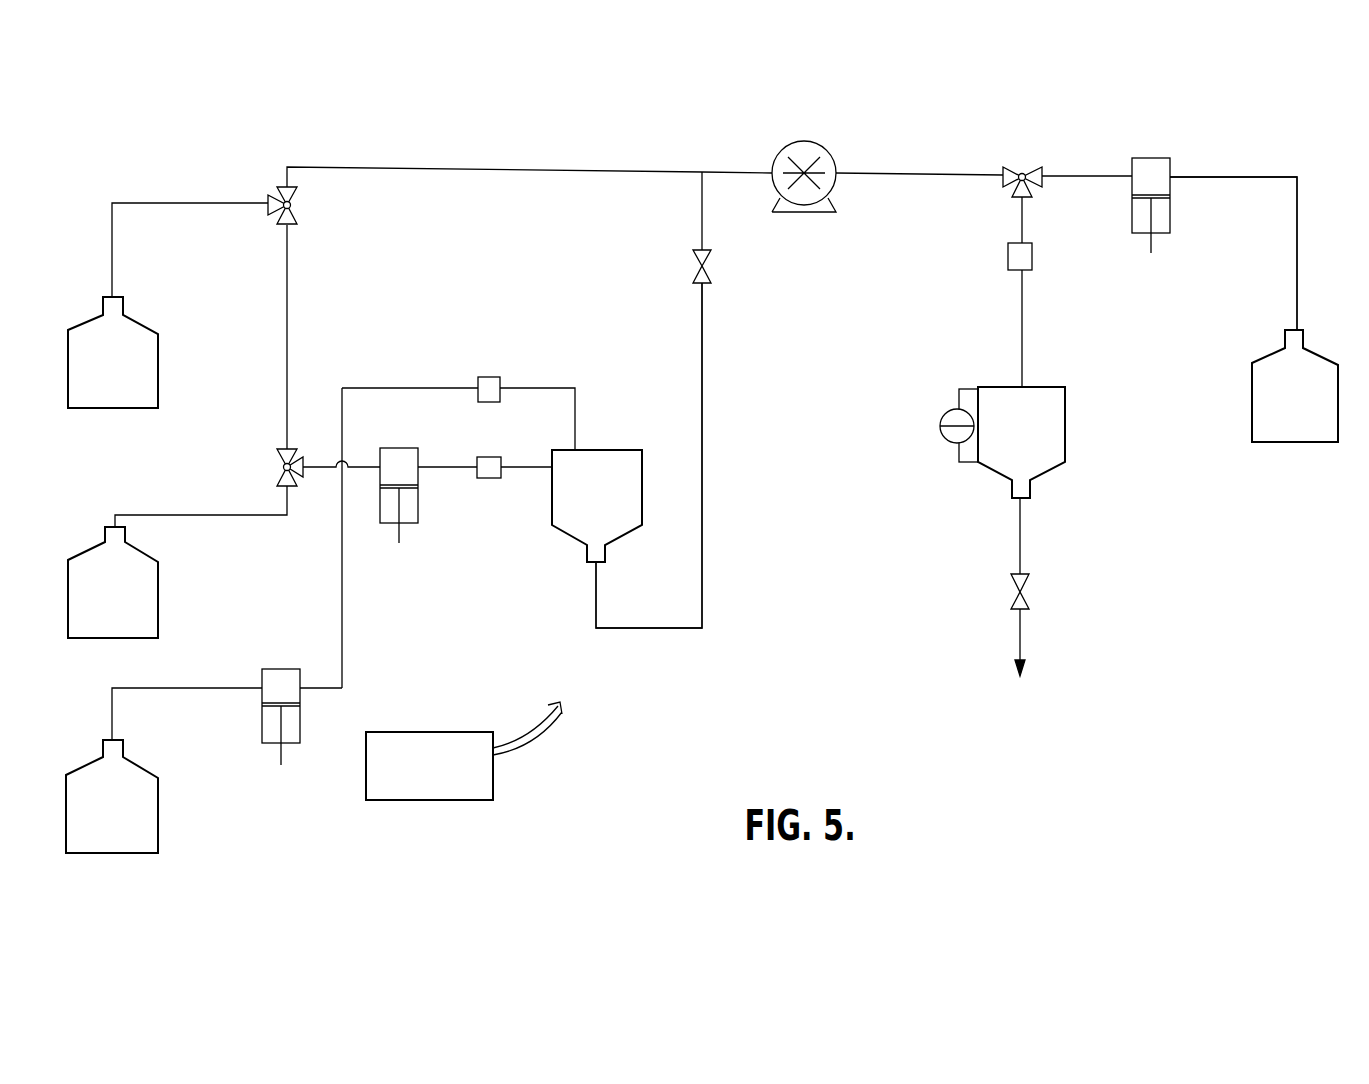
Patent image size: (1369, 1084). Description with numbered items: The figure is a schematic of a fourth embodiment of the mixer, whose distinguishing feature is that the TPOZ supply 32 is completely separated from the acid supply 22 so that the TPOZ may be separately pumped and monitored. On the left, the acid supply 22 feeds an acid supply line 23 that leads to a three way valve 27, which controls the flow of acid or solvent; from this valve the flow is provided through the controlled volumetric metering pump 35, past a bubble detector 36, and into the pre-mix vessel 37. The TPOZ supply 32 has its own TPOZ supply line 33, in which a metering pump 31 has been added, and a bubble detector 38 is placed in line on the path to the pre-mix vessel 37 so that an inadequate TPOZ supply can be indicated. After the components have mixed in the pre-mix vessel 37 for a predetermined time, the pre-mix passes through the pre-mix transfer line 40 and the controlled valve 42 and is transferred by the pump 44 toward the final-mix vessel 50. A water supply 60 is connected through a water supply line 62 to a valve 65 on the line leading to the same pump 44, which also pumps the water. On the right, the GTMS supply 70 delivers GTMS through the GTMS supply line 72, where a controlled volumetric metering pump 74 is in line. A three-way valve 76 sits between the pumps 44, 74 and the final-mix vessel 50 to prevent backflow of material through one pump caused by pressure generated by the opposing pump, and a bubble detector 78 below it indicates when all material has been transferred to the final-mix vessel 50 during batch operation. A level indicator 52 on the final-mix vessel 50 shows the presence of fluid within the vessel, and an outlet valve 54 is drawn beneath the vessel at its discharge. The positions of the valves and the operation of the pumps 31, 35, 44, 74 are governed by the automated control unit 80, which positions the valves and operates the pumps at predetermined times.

The supply of acid 22 is at (158, 590).
The acid supply line 23 is at (134, 500).
The three way valve 27 is at (278, 463).
The metering pump 31 is at (300, 718).
The TPOZ supply 32 is at (158, 782).
The TPOZ supply line 33 is at (189, 682).
The controlled volumetric metering pump 35 is at (420, 495).
The bubble detector 36 is at (481, 480).
The pre-mix vessel 37 is at (600, 450).
The bubble detector 38 is at (484, 376).
The pre-mix transfer line 40 is at (705, 560).
The controlled valve 42 is at (708, 262).
The metering pump 44 is at (822, 148).
The final-mix vessel 50 is at (1067, 425).
The level indicator 52 is at (940, 415).
The outlet valve 54 is at (1030, 596).
The water supply 60 is at (137, 322).
The water supply line 62 is at (159, 192).
The three-way valve 65 is at (293, 212).
The GTMS supply 70 is at (1310, 345).
The GTMS supply line 72 is at (1305, 228).
The controlled volumetric metering pump 74 is at (1158, 158).
The three-way valve 76 is at (1025, 165).
The bubble detector 78 is at (1000, 250).
The automated control unit 80 is at (423, 732).